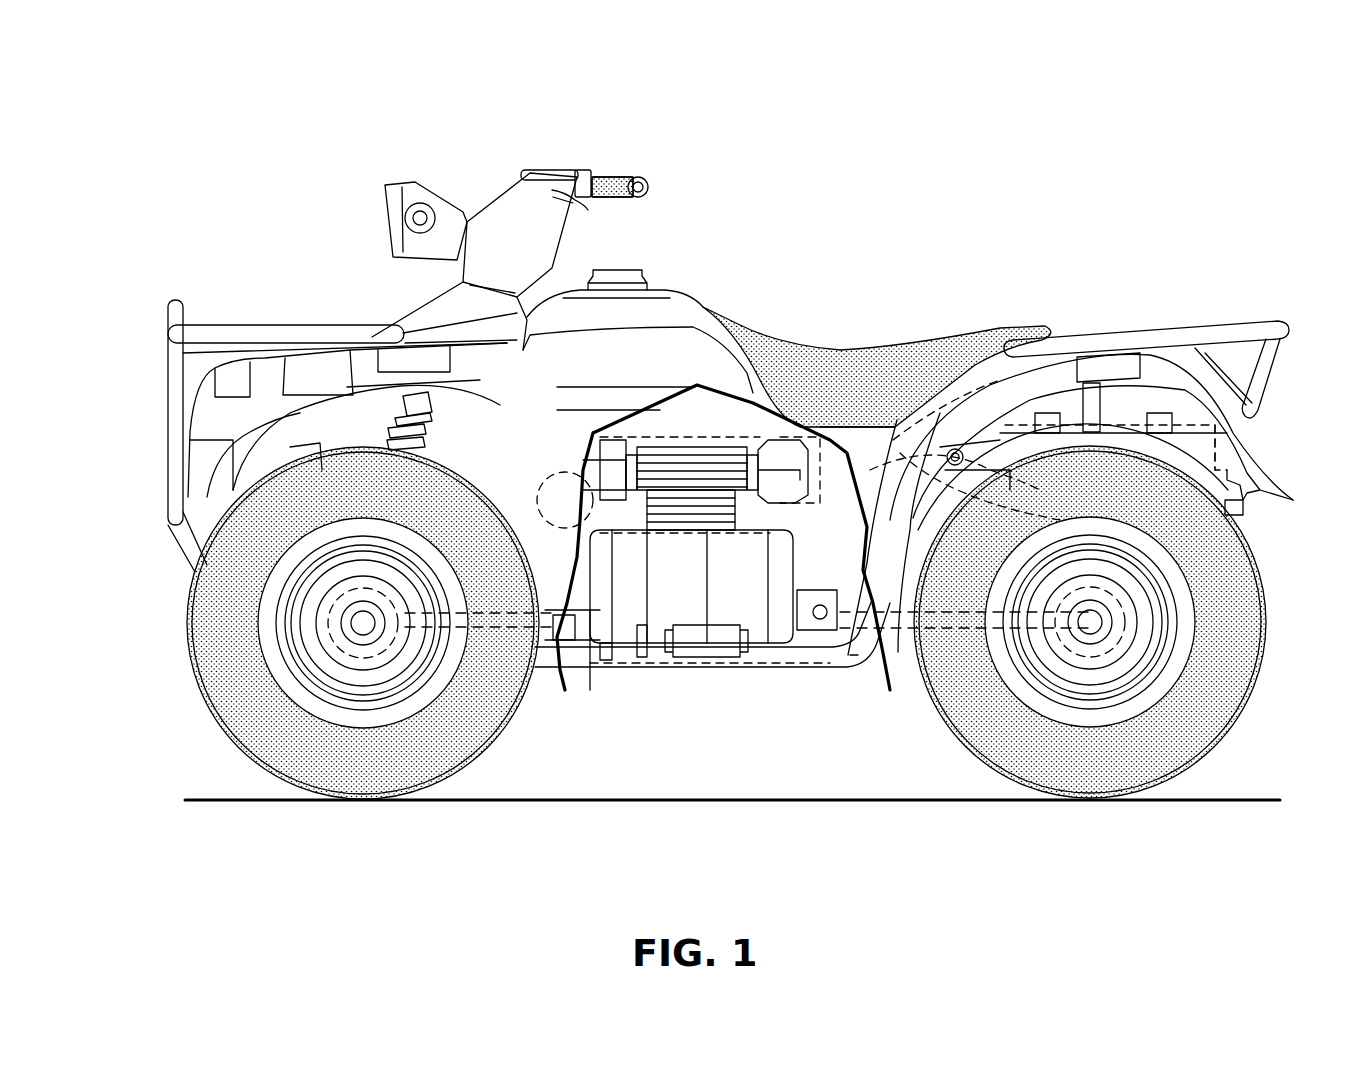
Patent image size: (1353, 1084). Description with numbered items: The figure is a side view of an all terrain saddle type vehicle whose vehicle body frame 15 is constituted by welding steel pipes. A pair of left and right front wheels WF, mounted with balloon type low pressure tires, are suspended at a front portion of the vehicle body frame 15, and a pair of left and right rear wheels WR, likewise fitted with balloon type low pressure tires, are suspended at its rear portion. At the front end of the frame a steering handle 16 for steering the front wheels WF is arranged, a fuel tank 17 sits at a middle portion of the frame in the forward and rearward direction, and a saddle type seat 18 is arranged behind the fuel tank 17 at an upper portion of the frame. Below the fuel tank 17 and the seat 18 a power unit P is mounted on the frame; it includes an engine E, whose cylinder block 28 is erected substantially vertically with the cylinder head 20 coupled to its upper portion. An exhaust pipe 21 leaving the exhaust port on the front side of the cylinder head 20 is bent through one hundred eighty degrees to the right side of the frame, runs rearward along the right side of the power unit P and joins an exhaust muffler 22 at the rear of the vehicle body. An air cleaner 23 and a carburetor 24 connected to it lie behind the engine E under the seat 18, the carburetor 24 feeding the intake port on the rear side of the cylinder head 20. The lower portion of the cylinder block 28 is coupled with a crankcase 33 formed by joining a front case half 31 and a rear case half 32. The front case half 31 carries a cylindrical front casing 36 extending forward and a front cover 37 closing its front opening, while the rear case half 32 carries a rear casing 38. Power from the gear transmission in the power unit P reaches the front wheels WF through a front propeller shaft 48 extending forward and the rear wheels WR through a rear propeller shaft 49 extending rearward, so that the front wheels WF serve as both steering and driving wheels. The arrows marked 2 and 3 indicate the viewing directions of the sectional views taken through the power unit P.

The vehicle body frame 15 is at (817, 673).
The steering handle 16 is at (620, 172).
The fuel tank 17 is at (673, 303).
The saddle type seat 18 is at (977, 340).
The cylinder head 20 is at (688, 463).
The exhaust pipe 21 is at (600, 475).
The exhaust muffler 22 is at (1120, 427).
The air cleaner 23 is at (872, 430).
The carburetor 24 is at (787, 493).
The cylinder block 28 is at (683, 503).
The front case half 31 is at (648, 627).
The rear case half 32 is at (763, 637).
The crankcase 33 is at (742, 727).
The front casing 36 is at (637, 633).
The front cover 37 is at (600, 633).
The rear casing 38 is at (783, 623).
The front propeller shaft 48 is at (573, 620).
The rear propeller shaft 49 is at (860, 627).
The engine E is at (618, 457).
The power unit P is at (553, 517).
The front wheels WF is at (467, 717).
The rear wheels WR is at (1227, 670).
The section line for FIG. 2 is at (830, 577).
The section line for FIG. 3 is at (587, 577).